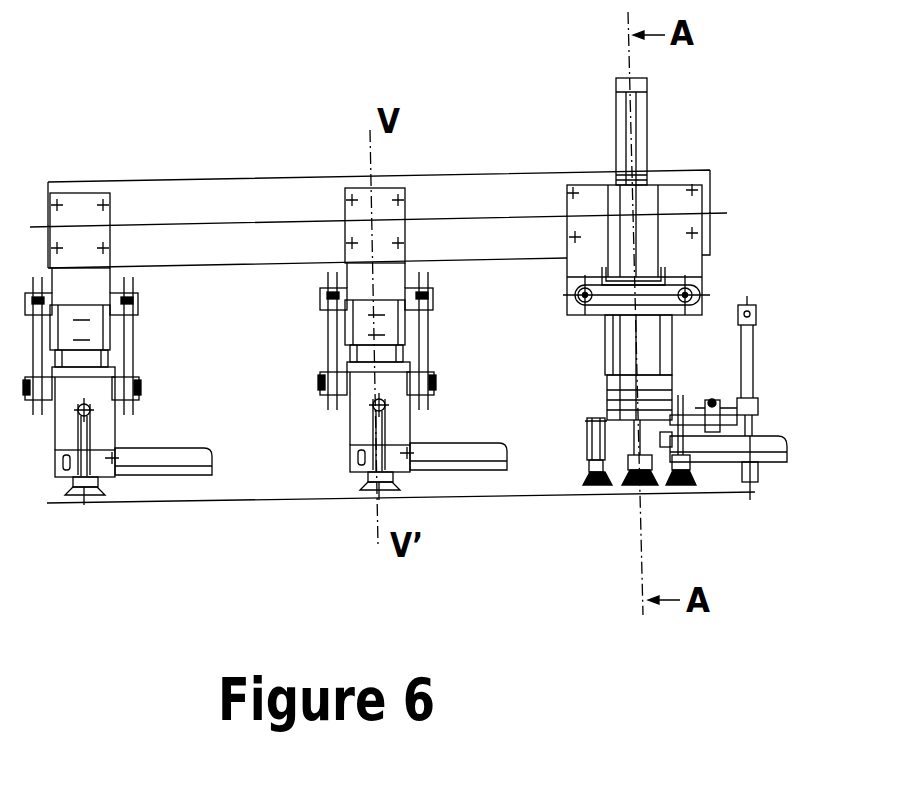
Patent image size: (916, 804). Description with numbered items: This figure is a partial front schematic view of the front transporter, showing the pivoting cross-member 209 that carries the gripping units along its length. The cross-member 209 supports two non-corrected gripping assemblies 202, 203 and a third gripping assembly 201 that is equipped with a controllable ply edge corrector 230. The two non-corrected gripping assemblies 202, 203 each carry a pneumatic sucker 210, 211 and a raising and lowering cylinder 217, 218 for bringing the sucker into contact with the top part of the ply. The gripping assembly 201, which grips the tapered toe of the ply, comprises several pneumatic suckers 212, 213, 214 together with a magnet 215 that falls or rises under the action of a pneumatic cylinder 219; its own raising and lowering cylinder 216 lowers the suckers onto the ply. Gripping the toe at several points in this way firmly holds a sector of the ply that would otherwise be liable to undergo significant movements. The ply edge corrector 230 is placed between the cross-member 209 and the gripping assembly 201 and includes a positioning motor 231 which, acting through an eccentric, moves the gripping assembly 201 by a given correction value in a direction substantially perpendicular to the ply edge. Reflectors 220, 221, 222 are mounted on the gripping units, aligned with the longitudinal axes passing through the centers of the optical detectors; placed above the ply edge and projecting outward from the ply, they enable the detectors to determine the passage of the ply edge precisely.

The gripping assembly 201 is at (678, 235).
The non-corrected gripping assembly 202 is at (348, 255).
The non-corrected gripping assembly 203 is at (88, 272).
The cross-member 209 is at (222, 195).
The pneumatic sucker 210 is at (76, 497).
The pneumatic sucker 211 is at (370, 490).
The pneumatic sucker 212 is at (590, 485).
The pneumatic sucker 213 is at (636, 486).
The pneumatic sucker 214 is at (686, 486).
The magnet 215 is at (760, 480).
The raising and lowering cylinder 216 is at (613, 352).
The raising and lowering cylinder 217 is at (385, 332).
The raising and lowering cylinder 218 is at (100, 326).
The pneumatic cylinder 219 is at (753, 374).
The reflector 220 is at (782, 455).
The reflector 221 is at (490, 472).
The reflector 222 is at (172, 478).
The ply edge corrector 230 is at (715, 287).
The positioning motor 231 is at (616, 110).